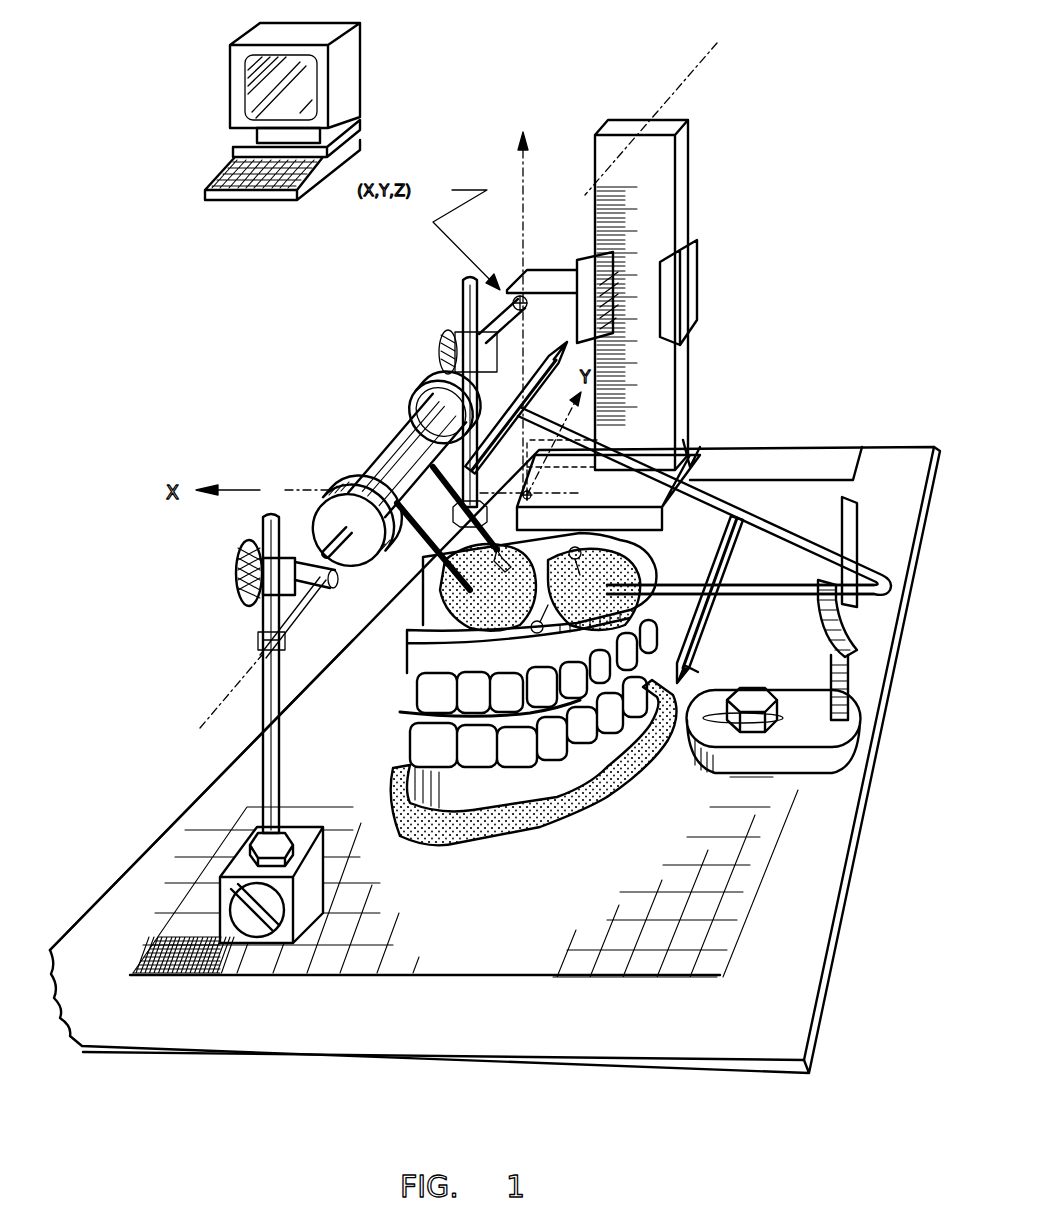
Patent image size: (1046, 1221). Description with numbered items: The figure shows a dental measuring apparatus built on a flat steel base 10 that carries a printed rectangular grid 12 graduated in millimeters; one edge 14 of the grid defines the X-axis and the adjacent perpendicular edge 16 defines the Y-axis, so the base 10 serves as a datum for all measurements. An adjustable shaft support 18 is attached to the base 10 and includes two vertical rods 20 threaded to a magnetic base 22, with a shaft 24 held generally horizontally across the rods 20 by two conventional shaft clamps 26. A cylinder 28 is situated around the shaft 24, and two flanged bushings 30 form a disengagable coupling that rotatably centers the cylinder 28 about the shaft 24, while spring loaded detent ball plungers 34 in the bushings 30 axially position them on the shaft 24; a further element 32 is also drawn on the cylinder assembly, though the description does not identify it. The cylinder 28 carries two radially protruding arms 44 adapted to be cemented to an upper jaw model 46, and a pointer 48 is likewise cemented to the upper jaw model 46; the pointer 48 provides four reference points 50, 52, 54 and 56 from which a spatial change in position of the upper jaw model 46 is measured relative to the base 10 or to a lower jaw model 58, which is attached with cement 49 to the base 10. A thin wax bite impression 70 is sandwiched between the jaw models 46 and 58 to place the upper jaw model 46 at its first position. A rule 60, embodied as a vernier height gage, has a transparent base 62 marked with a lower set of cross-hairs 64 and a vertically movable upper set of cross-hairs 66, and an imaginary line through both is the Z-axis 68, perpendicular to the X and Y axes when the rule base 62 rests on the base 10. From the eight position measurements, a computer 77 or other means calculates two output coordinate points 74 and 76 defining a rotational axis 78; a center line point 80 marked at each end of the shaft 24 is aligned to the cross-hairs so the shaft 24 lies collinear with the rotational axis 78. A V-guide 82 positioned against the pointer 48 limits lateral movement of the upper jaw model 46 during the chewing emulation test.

The flat steel base 10 is at (828, 962).
The rectangular grid 12 is at (770, 850).
The edge 14 is at (650, 975).
The edge 16 is at (215, 830).
The adjustable shaft support 18 is at (285, 757).
The vertical rods 20 is at (290, 722).
The magnetic base 22 is at (320, 890).
The shaft 24 is at (300, 606).
The shaft clamps 26 is at (236, 577).
The cylinder 28 is at (390, 450).
The flanged bushings 30 is at (410, 395).
The lens 32 is at (375, 572).
The spring loaded detent ball plungers 34 is at (350, 490).
The radially protruding arms 44 is at (540, 517).
The upper jaw model 46 is at (655, 575).
The pointer 48 is at (792, 602).
The cement 49 is at (578, 547).
The reference point 50 is at (692, 683).
The reference point 52 is at (733, 516).
The reference point 54 is at (566, 347).
The reference point 56 is at (518, 420).
The lower jaw model 58 is at (392, 775).
The rule 60 is at (688, 150).
The transparent base 62 is at (700, 447).
The lower set of cross-hairs 64 is at (530, 495).
The upper set of cross-hairs 66 is at (530, 297).
The Z-axis 68 is at (530, 196).
The wax bite impression 70 is at (400, 705).
The output coordinate point 74 is at (262, 637).
The output coordinate point 76 is at (528, 302).
The computer 77 is at (358, 78).
The rotational axis 78 is at (690, 75).
The center line point 80 is at (512, 283).
The V-guide 82 is at (858, 530).